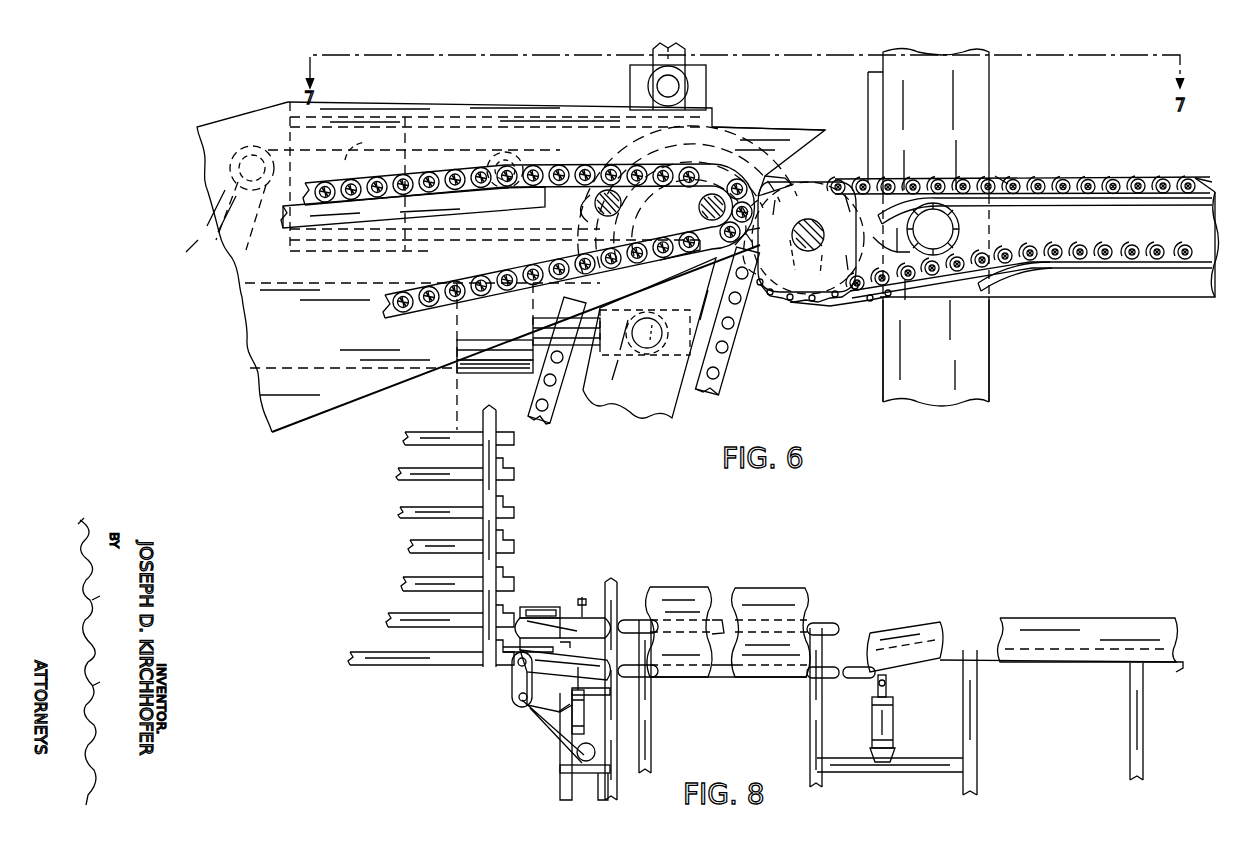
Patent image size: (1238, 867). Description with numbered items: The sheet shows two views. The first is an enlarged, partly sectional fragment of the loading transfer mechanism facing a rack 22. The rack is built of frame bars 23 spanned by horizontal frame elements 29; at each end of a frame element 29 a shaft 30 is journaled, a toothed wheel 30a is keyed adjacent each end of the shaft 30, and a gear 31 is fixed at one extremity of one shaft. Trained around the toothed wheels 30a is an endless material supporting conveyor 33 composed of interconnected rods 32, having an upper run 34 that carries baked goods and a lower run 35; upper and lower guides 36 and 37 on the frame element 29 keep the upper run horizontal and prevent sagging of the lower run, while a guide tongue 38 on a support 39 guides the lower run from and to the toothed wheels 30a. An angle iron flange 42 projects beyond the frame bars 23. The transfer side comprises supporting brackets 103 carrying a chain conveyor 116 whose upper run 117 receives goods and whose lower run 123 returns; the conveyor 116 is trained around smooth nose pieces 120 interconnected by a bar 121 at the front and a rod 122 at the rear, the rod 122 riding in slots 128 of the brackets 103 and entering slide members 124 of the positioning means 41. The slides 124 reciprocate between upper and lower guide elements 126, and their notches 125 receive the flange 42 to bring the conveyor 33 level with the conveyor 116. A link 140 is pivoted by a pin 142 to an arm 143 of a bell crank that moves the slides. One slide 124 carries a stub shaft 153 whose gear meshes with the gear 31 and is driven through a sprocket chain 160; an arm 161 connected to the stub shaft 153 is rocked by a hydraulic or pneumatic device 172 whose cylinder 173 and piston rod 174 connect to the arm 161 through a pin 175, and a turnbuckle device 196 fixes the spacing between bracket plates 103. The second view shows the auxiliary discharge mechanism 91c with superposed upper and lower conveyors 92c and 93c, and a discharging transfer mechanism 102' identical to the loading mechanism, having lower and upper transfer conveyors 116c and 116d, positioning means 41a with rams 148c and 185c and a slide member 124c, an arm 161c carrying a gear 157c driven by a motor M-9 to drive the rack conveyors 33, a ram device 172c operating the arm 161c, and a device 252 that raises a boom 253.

In FIG. 6, the turnbuckle device 196 is at (652, 46).
In FIG. 6, the pin 142 is at (246, 148).
In FIG. 6, the bell crank arm 143 is at (183, 245).
In FIG. 6, the positioning means 41 is at (790, 118).
In FIG. 6, the slide members 124 is at (768, 104).
In FIG. 6, the notches 125 is at (780, 168).
In FIG. 6, the guide elements 126 is at (330, 130).
In FIG. 6, the link 140 is at (356, 145).
In FIG. 6, the upper run 117 is at (562, 170).
In FIG. 6, the chain conveyor 116 is at (548, 178).
In FIG. 6, the lower run 123 is at (482, 292).
In FIG. 6, the slots 128 is at (565, 210).
In FIG. 6, the rod 122 is at (596, 198).
In FIG. 6, the bar 121 is at (700, 212).
In FIG. 6, the stub shaft 153 is at (700, 168).
In FIG. 6, the guide tongue 38 is at (864, 262).
In FIG. 6, the shaft 30 is at (818, 228).
In FIG. 6, the toothed wheel 30a is at (796, 302).
In FIG. 6, the gear 31 is at (822, 300).
In FIG. 6, the nose pieces 120 is at (668, 268).
In FIG. 6, the rack 22 is at (876, 352).
In FIG. 6, the frame bars 23 is at (968, 372).
In FIG. 6, the material supporting conveyor 33 is at (1060, 174).
In FIG. 8, the material supporting conveyor 33 is at (420, 616).
In FIG. 6, the rods 32 is at (1000, 178).
In FIG. 6, the upper run 34 is at (1130, 180).
In FIG. 6, the support 39 is at (960, 228).
In FIG. 6, the upper guide 36 is at (1030, 208).
In FIG. 6, the lower run 35 is at (1090, 244).
In FIG. 6, the lower guide 37 is at (1048, 275).
In FIG. 6, the horizontal frame elements 29 is at (1093, 294).
In FIG. 6, the supporting brackets 103 is at (358, 388).
In FIG. 6, the cylinder 173 is at (455, 368).
In FIG. 6, the pneumatic or hydraulic device 172 is at (465, 380).
In FIG. 6, the piston rod 174 is at (572, 355).
In FIG. 6, the arm 161 is at (670, 395).
In FIG. 6, the pin 175 is at (642, 348).
In FIG. 6, the sprocket chain 160 is at (726, 345).
In FIG. 8, the flange 42 is at (503, 540).
In FIG. 8, the ram 185c is at (536, 606).
In FIG. 8, the upper transfer conveyor 116d is at (576, 606).
In FIG. 8, the discharging transfer mechanism 102' is at (554, 596).
In FIG. 8, the positioning means 41a is at (512, 680).
In FIG. 8, the slide member 124c is at (512, 644).
In FIG. 8, the gear 157c is at (508, 668).
In FIG. 8, the arm 161c is at (516, 690).
In FIG. 8, the ram device 172c is at (550, 725).
In FIG. 8, the ram 148c is at (585, 715).
In FIG. 8, the motor M-9 is at (595, 750).
In FIG. 8, the upper conveyor 92c is at (633, 630).
In FIG. 8, the lower discharge conveyor 93c is at (660, 678).
In FIG. 8, the auxiliary discharge mechanism 91c is at (692, 584).
In FIG. 8, the lower transfer conveyor 116c is at (640, 636).
In FIG. 8, the boom 253 is at (950, 660).
In FIG. 8, the device 252 is at (872, 705).